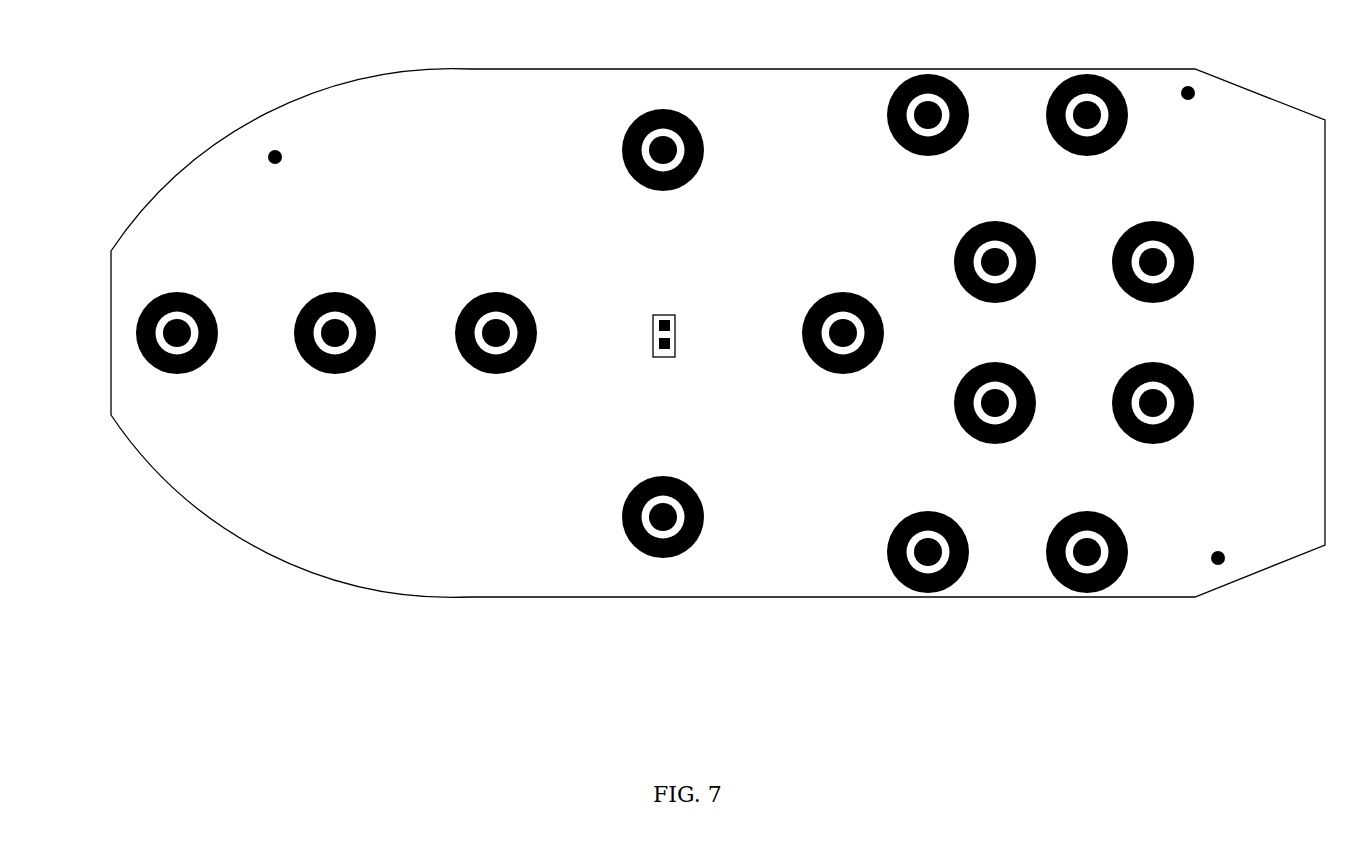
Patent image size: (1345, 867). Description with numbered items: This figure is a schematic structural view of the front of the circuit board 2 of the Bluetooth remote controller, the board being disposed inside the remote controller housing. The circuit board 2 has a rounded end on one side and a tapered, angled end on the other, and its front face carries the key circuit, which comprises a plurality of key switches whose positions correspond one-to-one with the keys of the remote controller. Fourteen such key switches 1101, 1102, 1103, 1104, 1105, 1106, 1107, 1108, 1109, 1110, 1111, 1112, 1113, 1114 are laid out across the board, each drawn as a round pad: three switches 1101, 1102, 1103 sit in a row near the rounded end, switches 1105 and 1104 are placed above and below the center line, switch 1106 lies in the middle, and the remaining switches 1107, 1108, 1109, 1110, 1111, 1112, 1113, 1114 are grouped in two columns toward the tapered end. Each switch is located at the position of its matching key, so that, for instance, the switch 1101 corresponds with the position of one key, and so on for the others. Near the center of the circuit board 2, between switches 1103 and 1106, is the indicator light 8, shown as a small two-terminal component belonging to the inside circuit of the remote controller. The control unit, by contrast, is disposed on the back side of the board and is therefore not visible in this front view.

The circuit board 2 is at (700, 26).
The indicator light 8 is at (652, 330).
The key switch 1101 is at (177, 314).
The key switch 1102 is at (335, 319).
The key switch 1103 is at (493, 320).
The key switch 1104 is at (661, 504).
The key switch 1105 is at (661, 136).
The key switch 1106 is at (839, 319).
The key switch 1107 is at (926, 538).
The key switch 1108 is at (992, 390).
The key switch 1109 is at (992, 248).
The key switch 1110 is at (904, 115).
The key switch 1111 is at (1085, 538).
The key switch 1112 is at (1151, 390).
The key switch 1113 is at (1151, 248).
The key switch 1114 is at (1067, 115).